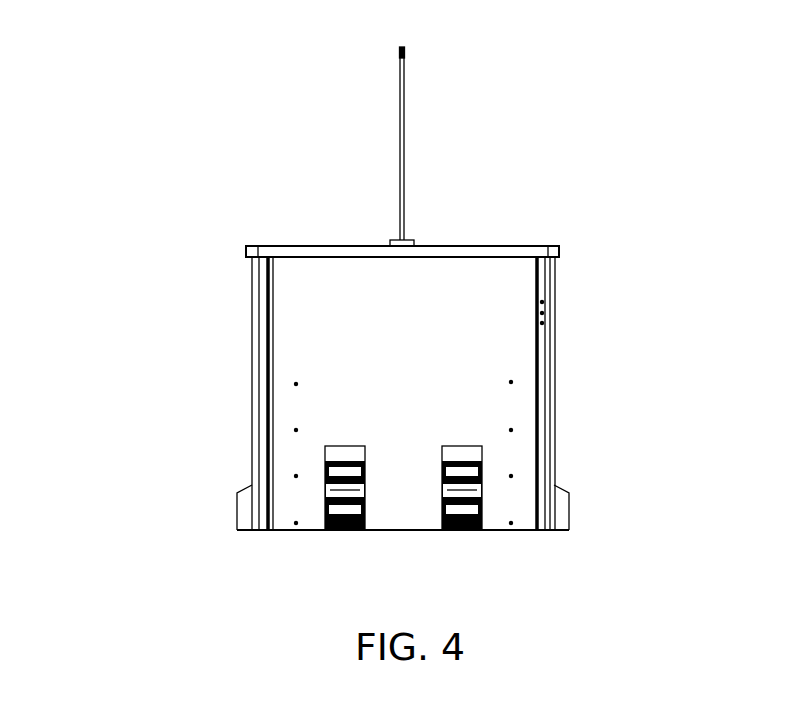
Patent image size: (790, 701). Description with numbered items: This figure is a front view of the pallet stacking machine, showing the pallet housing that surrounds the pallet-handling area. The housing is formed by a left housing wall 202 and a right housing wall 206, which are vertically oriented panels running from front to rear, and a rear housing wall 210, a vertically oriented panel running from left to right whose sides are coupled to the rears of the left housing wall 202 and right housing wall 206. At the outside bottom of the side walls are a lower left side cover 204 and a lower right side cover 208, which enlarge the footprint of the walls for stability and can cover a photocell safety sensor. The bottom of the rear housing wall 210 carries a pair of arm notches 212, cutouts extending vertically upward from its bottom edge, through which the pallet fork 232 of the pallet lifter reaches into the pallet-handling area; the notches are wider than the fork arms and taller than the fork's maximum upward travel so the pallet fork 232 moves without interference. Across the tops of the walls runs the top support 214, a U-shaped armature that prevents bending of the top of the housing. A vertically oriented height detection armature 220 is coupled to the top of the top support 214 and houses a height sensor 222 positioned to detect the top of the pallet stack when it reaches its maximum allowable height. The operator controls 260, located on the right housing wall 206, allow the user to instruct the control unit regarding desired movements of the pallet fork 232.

The left housing wall 202 is at (268, 430).
The lower left side cover 204 is at (241, 507).
The right housing wall 206 is at (545, 405).
The lower right side cover 208 is at (569, 505).
The rear housing wall 210 is at (505, 285).
The pair of arm notches 212 is at (453, 447).
The top support 214 is at (282, 246).
The height detection armature 220 is at (400, 195).
The height sensor 222 is at (405, 56).
The pallet fork 232 is at (440, 528).
The operator controls 260 is at (563, 296).